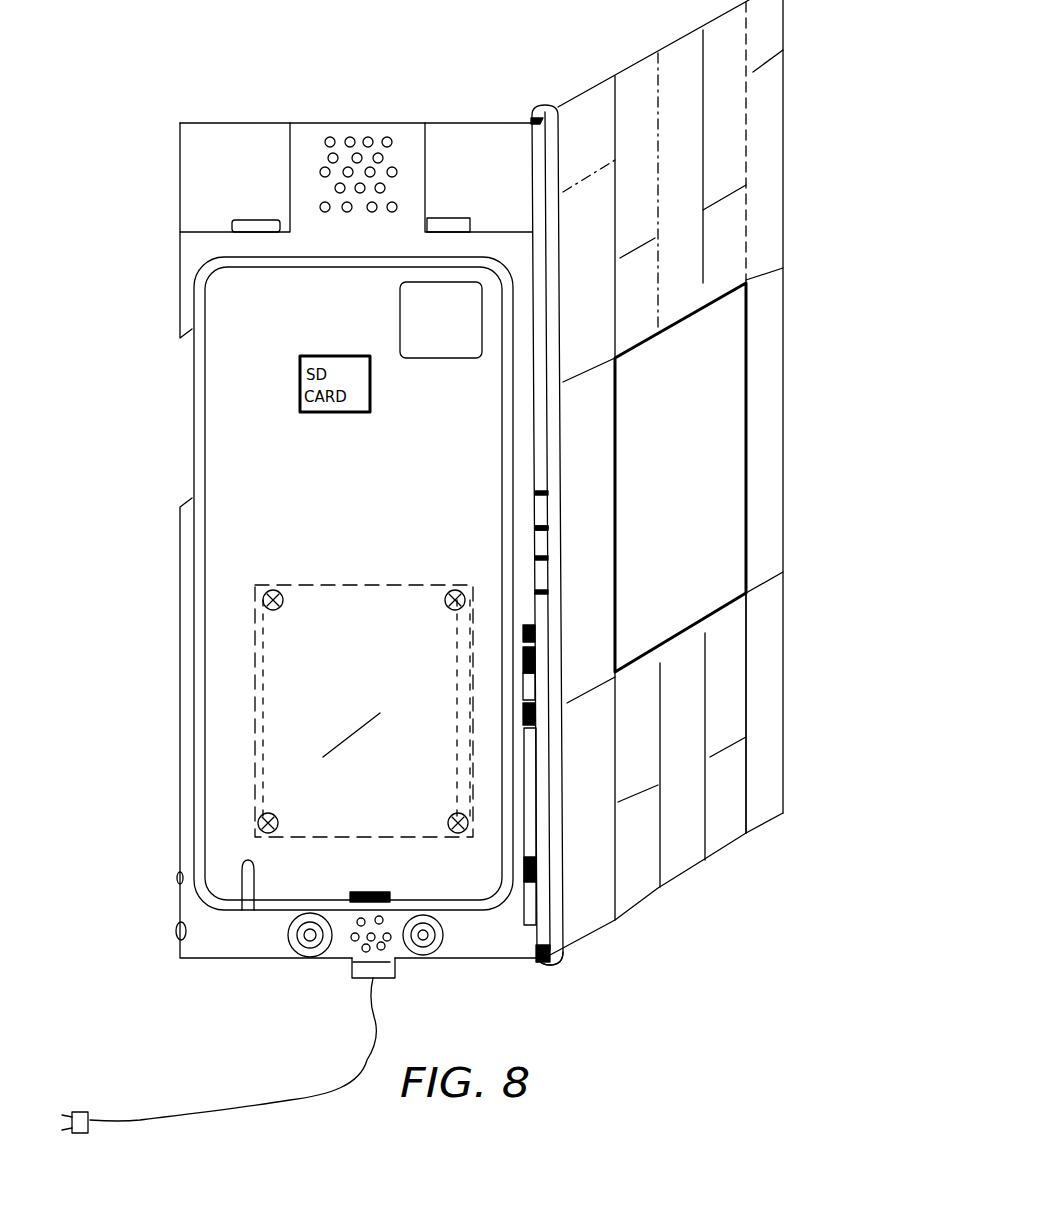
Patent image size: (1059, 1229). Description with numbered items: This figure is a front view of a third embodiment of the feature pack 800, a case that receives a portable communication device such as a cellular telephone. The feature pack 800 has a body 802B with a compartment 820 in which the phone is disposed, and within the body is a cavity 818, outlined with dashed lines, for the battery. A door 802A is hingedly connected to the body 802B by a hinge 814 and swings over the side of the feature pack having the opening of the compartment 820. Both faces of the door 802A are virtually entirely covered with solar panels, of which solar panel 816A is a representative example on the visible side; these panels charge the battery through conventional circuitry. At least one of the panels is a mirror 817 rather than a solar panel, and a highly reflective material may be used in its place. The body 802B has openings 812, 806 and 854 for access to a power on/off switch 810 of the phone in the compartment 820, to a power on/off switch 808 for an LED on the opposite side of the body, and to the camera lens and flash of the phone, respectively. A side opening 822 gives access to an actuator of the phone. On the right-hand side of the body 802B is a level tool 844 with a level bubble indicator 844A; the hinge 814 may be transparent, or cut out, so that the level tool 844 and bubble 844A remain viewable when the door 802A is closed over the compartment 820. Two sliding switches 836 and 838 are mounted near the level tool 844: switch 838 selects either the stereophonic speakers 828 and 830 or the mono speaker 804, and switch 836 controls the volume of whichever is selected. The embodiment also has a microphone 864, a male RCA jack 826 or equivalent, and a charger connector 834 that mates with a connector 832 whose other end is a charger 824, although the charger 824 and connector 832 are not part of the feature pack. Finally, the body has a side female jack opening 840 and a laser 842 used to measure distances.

The feature pack 800 is at (365, 57).
The door 802A is at (602, 78).
The body 802B is at (463, 125).
The mono speaker 804 is at (397, 143).
The opening 806 is at (213, 175).
The power on/off switch 808 is at (245, 217).
The power on/off switch 810 is at (452, 218).
The opening 812 is at (485, 150).
The hinge 814 is at (537, 110).
The solar panel 816A is at (767, 525).
The mirror 817 is at (727, 372).
The cavity 818 is at (343, 585).
The compartment 820 is at (245, 485).
The side opening 822 is at (192, 415).
The charger 824 is at (90, 1112).
The male RCA jack 826 is at (256, 890).
The stereophonic speaker 828 is at (308, 957).
The stereophonic speaker 830 is at (440, 957).
The connector 832 is at (395, 978).
The charger connector 834 is at (385, 897).
The volume control switch 836 is at (528, 932).
The sliding switch 838 is at (527, 625).
The side female jack opening 840 is at (180, 935).
The laser 842 is at (178, 878).
The level tool 844 is at (533, 457).
The level bubble indicator 844A is at (537, 540).
The opening 854 is at (415, 305).
The microphone 864 is at (355, 945).